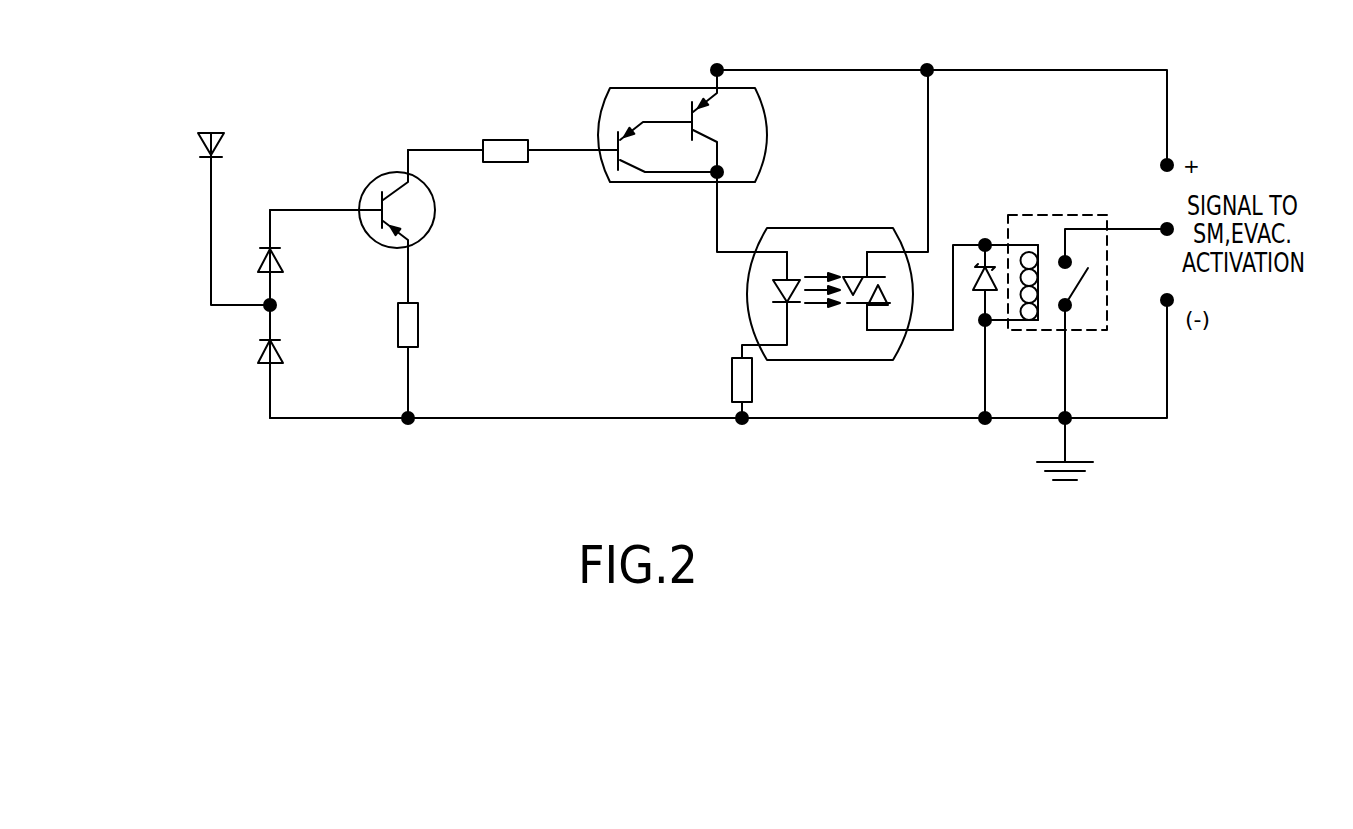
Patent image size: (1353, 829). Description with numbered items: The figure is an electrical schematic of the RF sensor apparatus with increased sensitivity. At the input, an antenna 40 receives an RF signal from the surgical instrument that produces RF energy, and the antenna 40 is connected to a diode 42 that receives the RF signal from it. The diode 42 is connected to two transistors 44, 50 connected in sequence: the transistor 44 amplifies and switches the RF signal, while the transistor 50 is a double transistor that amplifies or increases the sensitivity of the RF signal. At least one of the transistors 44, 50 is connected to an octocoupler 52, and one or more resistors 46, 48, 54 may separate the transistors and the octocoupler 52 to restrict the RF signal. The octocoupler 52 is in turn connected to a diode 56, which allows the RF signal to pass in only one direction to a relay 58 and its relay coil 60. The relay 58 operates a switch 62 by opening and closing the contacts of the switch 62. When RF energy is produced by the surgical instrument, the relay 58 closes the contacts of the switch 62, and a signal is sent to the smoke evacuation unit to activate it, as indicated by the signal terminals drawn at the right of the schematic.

The antenna 40 is at (199, 136).
The diode 42 is at (258, 266).
The transistor 44 is at (380, 175).
The resistor 46 is at (418, 322).
The resistor 48 is at (505, 138).
The transistor 50 is at (652, 88).
The octocoupler 52 is at (815, 228).
The resistor 54 is at (732, 373).
The diode 56 is at (972, 292).
The relay 58 is at (1055, 215).
The relay coil 60 is at (1034, 322).
The switch 62 is at (1090, 283).